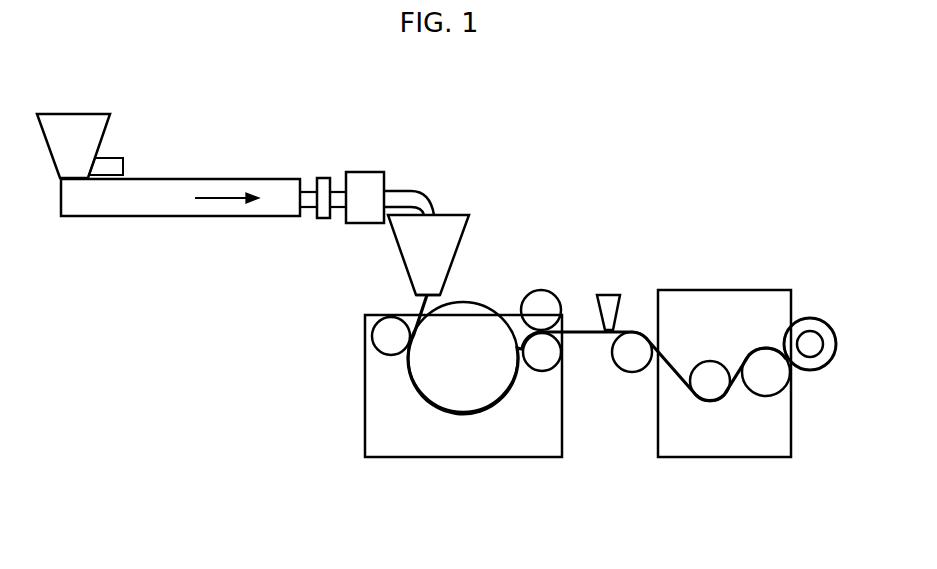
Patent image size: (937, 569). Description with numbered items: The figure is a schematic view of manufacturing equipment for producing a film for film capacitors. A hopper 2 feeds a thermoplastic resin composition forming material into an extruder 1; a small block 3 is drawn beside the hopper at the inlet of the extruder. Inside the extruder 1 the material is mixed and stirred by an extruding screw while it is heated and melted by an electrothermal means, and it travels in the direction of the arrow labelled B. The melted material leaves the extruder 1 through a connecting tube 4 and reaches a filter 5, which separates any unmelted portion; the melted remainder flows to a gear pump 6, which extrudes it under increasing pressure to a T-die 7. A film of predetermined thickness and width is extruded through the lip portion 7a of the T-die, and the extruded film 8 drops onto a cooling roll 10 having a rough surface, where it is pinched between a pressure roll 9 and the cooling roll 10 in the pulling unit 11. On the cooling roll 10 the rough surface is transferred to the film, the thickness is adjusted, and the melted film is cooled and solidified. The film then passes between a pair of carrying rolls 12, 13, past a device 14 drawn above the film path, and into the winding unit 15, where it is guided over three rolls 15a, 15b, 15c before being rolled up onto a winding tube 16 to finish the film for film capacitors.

The extruder 1 is at (141, 206).
The hopper 2 is at (107, 133).
The feeder 3 is at (117, 168).
The connecting tube 4 is at (310, 190).
The filter 5 is at (322, 180).
The gear pump 6 is at (367, 185).
The T-die 7 is at (443, 228).
The die outlet 7a is at (442, 286).
The molten resin film 8 is at (421, 312).
The pressure roll 9 is at (385, 333).
The cooling roll 10 is at (475, 318).
The pulling unit 11 is at (399, 436).
The carrying roll 12 is at (548, 300).
The carrying roll 13 is at (542, 355).
The trimming device 14 is at (612, 302).
The winding unit 15 is at (687, 434).
The stretching roll 15a is at (632, 357).
The stretching roll 15b is at (712, 377).
The stretching roll 15c is at (777, 375).
The winding tube 16 is at (826, 307).